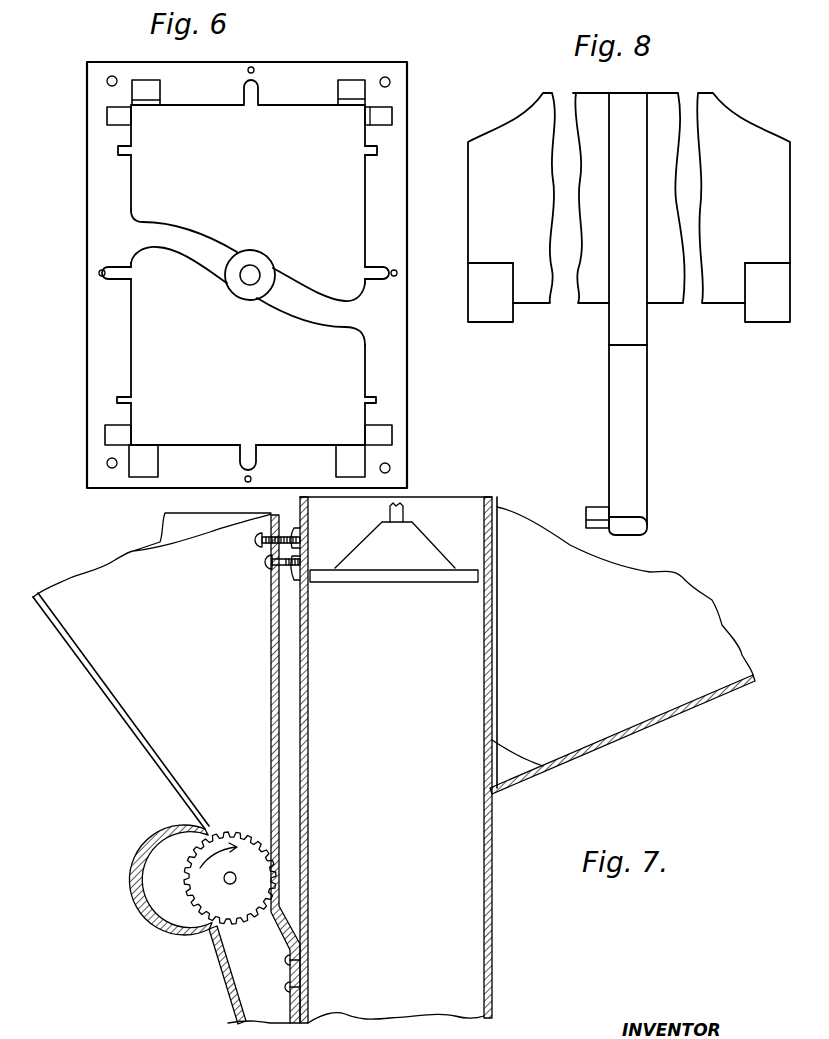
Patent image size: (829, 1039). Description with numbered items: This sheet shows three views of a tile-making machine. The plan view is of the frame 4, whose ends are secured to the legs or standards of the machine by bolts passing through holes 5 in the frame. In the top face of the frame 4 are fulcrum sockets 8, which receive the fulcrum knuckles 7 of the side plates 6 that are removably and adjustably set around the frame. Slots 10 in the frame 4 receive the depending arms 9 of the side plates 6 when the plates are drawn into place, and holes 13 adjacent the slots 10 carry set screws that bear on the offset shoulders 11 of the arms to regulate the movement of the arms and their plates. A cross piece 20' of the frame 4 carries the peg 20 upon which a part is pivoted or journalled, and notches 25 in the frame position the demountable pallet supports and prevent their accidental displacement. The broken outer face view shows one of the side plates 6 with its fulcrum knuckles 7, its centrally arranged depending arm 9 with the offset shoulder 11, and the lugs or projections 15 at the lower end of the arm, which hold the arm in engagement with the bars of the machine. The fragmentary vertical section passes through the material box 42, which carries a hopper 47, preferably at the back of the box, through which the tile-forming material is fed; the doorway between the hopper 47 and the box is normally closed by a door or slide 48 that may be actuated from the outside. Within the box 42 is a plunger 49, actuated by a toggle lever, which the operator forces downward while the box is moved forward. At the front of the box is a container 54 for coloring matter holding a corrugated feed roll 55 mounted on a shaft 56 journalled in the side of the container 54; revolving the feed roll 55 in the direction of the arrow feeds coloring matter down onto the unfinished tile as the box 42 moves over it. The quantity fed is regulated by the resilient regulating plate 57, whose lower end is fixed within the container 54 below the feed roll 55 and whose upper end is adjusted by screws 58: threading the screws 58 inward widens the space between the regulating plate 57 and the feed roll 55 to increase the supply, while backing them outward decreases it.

In FIG. 6, the frame 4 is at (90, 341).
In FIG. 6, the holes 5 is at (106, 82).
In FIG. 6, the fulcrum sockets 8 is at (350, 86).
In FIG. 6, the slots 10 is at (125, 271).
In FIG. 6, the holes 13 is at (98, 272).
In FIG. 6, the peg 20 is at (268, 272).
In FIG. 6, the cross piece 20' is at (248, 276).
In FIG. 6, the notches 25 is at (128, 151).
In FIG. 8, the side plates 6 is at (532, 117).
In FIG. 8, the fulcrum knuckles 7 is at (509, 312).
In FIG. 8, the depending arms 9 is at (623, 413).
In FIG. 8, the offset shoulders 11 is at (608, 347).
In FIG. 8, the lugs or projections 15 is at (593, 507).
In FIG. 7, the material box 42 is at (479, 930).
In FIG. 7, the hopper 47 is at (632, 716).
In FIG. 7, the door or slide 48 is at (542, 764).
In FIG. 7, the plunger 49 is at (430, 585).
In FIG. 7, the container 54 is at (170, 757).
In FIG. 7, the corrugated feed roll 55 is at (197, 888).
In FIG. 7, the shaft 56 is at (225, 882).
In FIG. 7, the resilient regulating plate 57 is at (272, 769).
In FIG. 7, the screws 58 is at (267, 563).